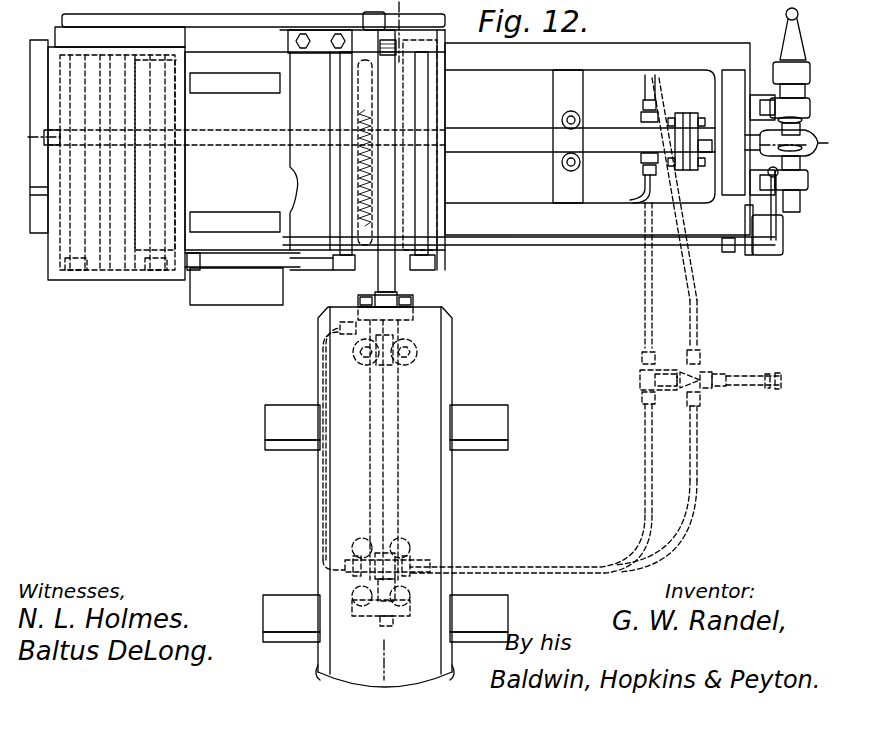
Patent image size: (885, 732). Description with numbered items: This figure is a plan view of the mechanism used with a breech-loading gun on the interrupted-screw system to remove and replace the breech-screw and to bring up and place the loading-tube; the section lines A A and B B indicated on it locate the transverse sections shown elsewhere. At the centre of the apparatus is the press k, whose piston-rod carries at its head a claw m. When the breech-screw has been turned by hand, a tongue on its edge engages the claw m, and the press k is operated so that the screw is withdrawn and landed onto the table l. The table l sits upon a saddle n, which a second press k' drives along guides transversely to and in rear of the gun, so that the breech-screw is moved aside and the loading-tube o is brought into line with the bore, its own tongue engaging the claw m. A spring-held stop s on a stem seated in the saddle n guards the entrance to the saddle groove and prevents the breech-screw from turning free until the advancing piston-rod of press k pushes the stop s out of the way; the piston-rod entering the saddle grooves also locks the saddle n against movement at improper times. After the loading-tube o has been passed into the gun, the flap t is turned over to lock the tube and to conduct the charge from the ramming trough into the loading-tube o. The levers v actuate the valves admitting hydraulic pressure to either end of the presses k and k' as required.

The section line A A is at (391, 347).
The section line B B is at (415, 141).
The loading-tube o is at (107, 153).
The flap t is at (242, 178).
The saddle n is at (366, 150).
The table l is at (389, 150).
The stop s is at (362, 21).
The claw m is at (390, 46).
The press k is at (385, 305).
The press k' is at (381, 140).
The levers v is at (786, 131).